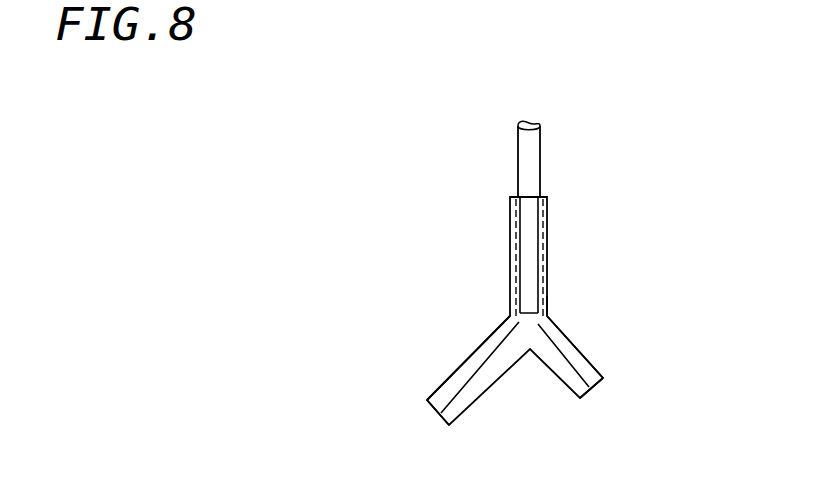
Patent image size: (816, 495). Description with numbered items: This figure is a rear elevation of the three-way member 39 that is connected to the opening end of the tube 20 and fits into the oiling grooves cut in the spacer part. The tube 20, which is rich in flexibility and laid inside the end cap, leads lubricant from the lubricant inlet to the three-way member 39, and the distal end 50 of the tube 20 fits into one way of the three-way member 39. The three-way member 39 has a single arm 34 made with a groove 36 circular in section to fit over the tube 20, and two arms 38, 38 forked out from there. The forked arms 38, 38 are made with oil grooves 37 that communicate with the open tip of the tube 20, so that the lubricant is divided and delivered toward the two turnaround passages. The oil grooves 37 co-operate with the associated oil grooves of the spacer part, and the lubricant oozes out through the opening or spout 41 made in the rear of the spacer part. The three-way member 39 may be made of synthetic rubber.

The tube 20 is at (541, 158).
The arm 34 is at (547, 226).
The groove 36 is at (517, 229).
The distal end 50 is at (536, 266).
The three-way member 39 is at (550, 305).
The oil grooves 37 is at (491, 362).
The arms 38 is at (458, 378).
The opening or spout 41 is at (437, 414).